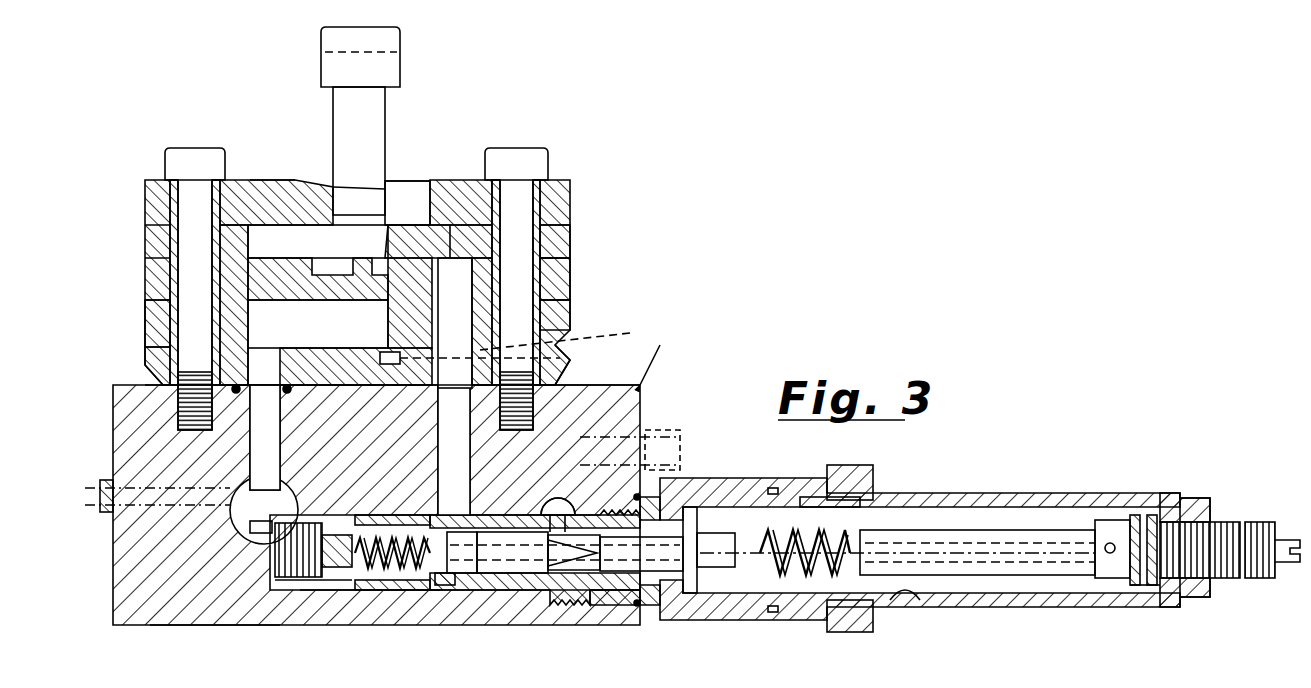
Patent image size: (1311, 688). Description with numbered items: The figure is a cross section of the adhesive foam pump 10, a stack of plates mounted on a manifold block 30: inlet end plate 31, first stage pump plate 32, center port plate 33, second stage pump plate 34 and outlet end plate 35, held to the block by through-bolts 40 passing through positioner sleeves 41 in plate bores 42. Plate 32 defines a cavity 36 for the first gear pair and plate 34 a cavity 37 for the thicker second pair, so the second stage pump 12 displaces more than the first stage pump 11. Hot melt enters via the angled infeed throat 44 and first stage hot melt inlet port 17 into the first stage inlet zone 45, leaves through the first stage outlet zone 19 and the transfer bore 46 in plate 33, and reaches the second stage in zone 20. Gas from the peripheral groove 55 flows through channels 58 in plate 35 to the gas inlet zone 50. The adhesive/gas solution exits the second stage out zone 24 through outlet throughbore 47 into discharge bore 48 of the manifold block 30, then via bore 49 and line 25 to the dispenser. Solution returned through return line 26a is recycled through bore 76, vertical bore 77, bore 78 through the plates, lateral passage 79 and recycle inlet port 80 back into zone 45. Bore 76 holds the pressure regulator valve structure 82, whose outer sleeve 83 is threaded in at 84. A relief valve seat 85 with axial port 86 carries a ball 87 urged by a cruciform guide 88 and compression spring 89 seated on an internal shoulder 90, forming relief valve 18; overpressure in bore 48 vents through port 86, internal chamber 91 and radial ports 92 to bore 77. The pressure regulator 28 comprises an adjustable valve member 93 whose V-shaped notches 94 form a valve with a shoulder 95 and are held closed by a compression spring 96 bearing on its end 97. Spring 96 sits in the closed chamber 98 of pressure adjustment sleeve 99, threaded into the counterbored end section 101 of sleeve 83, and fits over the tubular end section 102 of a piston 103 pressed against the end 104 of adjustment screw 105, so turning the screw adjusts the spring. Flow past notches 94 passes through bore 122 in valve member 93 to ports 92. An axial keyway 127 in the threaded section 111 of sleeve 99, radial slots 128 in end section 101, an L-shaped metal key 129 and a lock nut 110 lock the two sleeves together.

The adhesive foam pump 10 is at (605, 240).
The first stage pump 11 is at (143, 246).
The second stage pump 12 is at (143, 323).
The first stage hot melt inlet port 17 is at (400, 215).
The relief valve 18 is at (300, 600).
The first stage outlet zone 19 is at (282, 272).
The second stage hot melt in zone 20 is at (372, 305).
The second stage out zone 24 is at (290, 368).
The line 25 is at (98, 478).
The return line 26a is at (670, 440).
The pressure regulator 28 is at (540, 570).
The manifold block 30 is at (666, 352).
The inlet end plate 31 is at (570, 196).
The first stage pump plate 32 is at (570, 240).
The center port plate 33 is at (570, 282).
The second stage pump plate 34 is at (570, 318).
The outlet end plate 35 is at (565, 366).
The cavity 36 is at (290, 225).
The cavity 37 is at (300, 395).
The through-bolts 40 is at (196, 162).
The positioner sleeve 41 is at (175, 170).
The plate bores 42 is at (172, 200).
The angled infeed throat 44 is at (328, 182).
The first stage hot melt inlet zone 45 is at (380, 215).
The first to second stage transfer bore 46 is at (340, 280).
The outlet throughbore 47 is at (288, 393).
The discharge bore 48 is at (263, 450).
The bore 49 is at (205, 455).
The gas inlet zone 50 is at (390, 320).
The peripheral groove 55 is at (158, 352).
The channels 58 is at (392, 370).
The bore 76 is at (255, 578).
The vertical bore 77 is at (440, 445).
The bore 78 is at (455, 400).
The lateral passage 79 is at (475, 258).
The recycle inlet port 80 is at (400, 242).
The pressure regulator valve structure 82 is at (420, 585).
The outer sleeve 83 is at (385, 515).
The threaded connection 84 is at (625, 605).
The relief valve seat 85 is at (255, 560).
The axial port 86 is at (250, 555).
The ball 87 is at (340, 535).
The cruciform shaped guide 88 is at (340, 580).
The spring 89 is at (380, 570).
The internal shoulder 90 is at (448, 532).
The internal chamber 91 is at (440, 518).
The radial ports 92 is at (440, 585).
The adjustable valve member 93 is at (600, 575).
The notches 94 is at (540, 575).
The shoulder 95 is at (578, 500).
The compression spring 96 is at (915, 505).
The end 97 is at (692, 593).
The closed chamber 98 is at (1010, 530).
The pressure adjustment sleeve 99 is at (1100, 520).
The counterbored end section 101 is at (815, 495).
The tubular end section 102 is at (1050, 530).
The piston 103 is at (1105, 520).
The end 104 is at (1140, 580).
The adjustment screw 105 is at (1230, 522).
The lock nut 110 is at (845, 632).
The threaded section 111 is at (905, 600).
The bore 122 is at (800, 565).
The axial keyway 127 is at (810, 505).
The radial slots 128 is at (830, 500).
The L-shaped metal key 129 is at (850, 540).